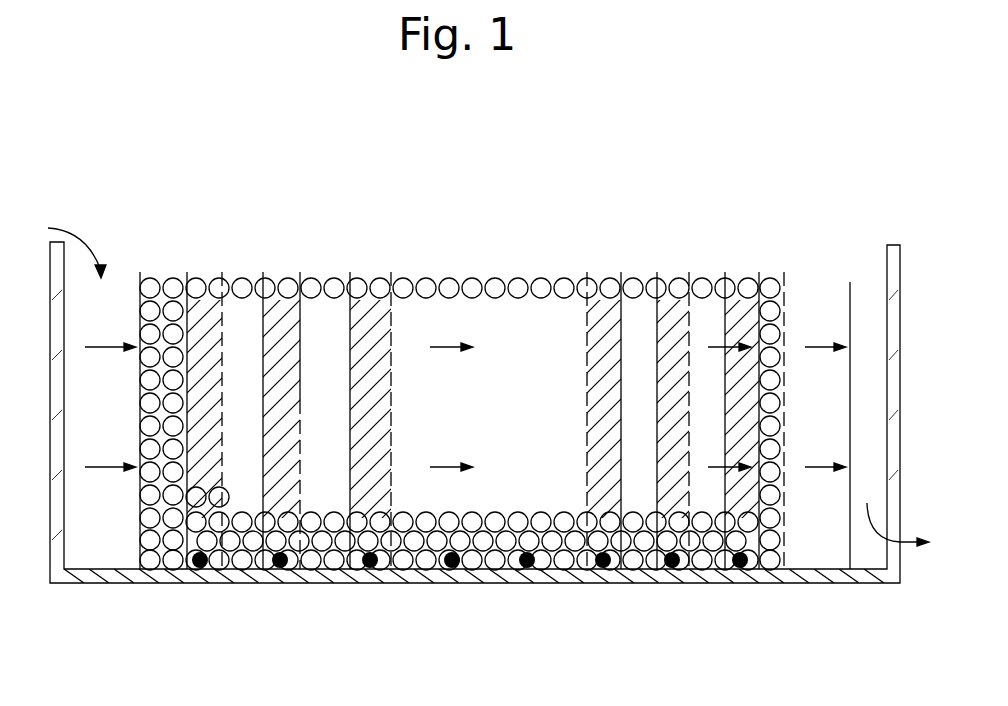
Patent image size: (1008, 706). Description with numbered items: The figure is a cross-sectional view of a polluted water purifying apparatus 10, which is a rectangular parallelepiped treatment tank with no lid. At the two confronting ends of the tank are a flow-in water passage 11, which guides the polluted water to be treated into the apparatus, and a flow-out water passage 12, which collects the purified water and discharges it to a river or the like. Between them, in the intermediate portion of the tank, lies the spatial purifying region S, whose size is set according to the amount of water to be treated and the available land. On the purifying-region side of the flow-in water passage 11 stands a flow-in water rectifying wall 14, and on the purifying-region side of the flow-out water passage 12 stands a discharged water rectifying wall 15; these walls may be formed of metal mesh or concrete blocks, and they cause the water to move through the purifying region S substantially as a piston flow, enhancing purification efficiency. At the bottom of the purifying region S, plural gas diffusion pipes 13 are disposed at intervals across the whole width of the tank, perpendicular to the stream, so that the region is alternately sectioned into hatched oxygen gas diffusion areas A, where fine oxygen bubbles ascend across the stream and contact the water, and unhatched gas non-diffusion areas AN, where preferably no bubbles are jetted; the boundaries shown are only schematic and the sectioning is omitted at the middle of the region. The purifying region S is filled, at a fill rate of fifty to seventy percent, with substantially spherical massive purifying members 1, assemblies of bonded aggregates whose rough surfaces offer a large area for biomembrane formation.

The massive purifying member 1 is at (497, 282).
The polluted water purifying apparatus 10 is at (824, 261).
The flow-in water passage 11 is at (120, 556).
The flow-out water passage 12 is at (870, 552).
The gas diffusion pipe 13 is at (385, 557).
The flow-in water rectifying wall 14 is at (140, 278).
The discharged water rectifying wall 15 is at (785, 272).
The oxygen gas diffusion area A is at (283, 322).
The gas non-diffusion area AN is at (318, 330).
The purifying region S is at (494, 434).